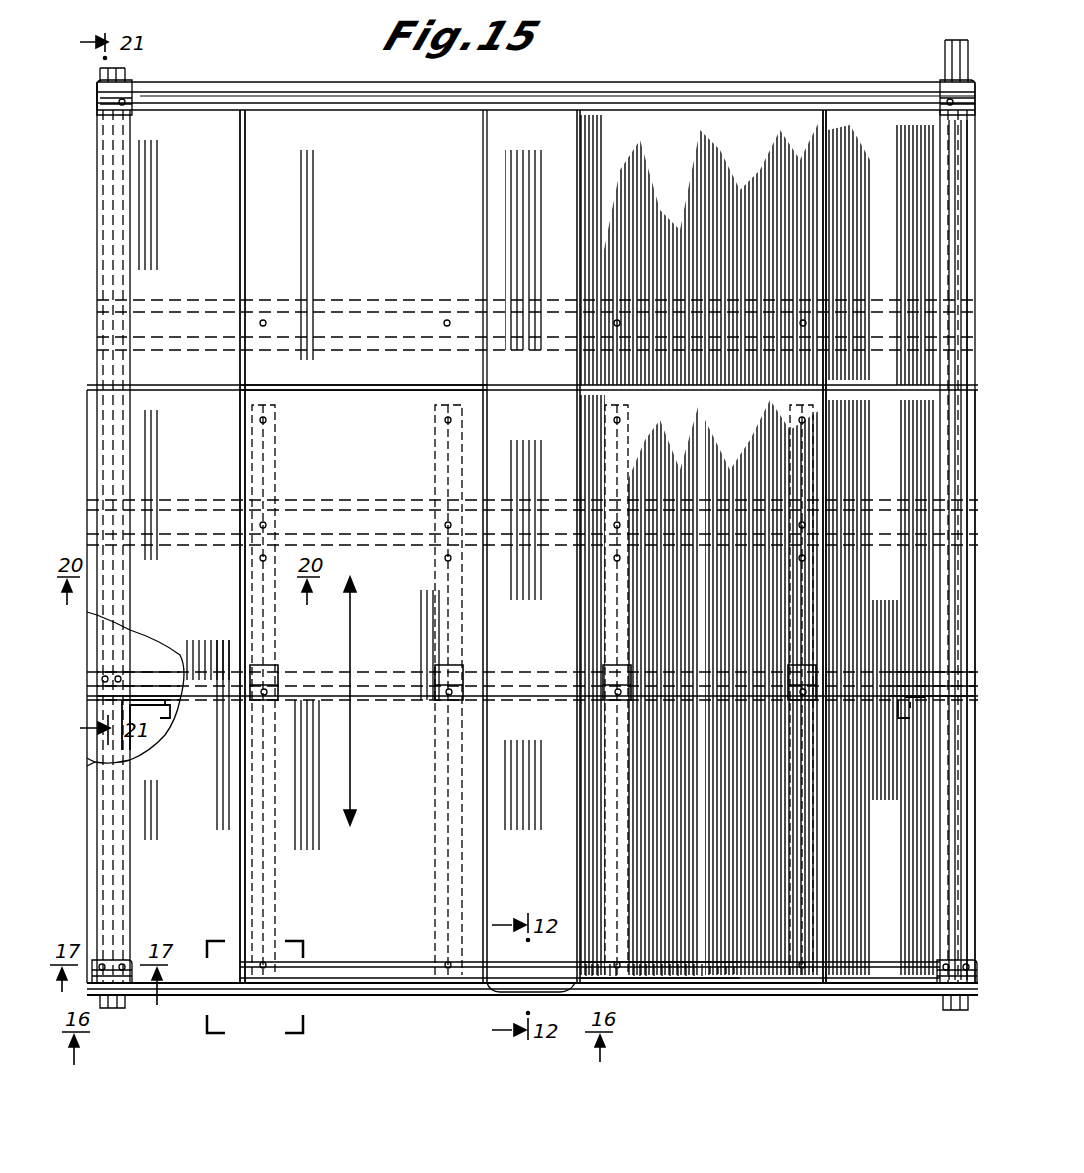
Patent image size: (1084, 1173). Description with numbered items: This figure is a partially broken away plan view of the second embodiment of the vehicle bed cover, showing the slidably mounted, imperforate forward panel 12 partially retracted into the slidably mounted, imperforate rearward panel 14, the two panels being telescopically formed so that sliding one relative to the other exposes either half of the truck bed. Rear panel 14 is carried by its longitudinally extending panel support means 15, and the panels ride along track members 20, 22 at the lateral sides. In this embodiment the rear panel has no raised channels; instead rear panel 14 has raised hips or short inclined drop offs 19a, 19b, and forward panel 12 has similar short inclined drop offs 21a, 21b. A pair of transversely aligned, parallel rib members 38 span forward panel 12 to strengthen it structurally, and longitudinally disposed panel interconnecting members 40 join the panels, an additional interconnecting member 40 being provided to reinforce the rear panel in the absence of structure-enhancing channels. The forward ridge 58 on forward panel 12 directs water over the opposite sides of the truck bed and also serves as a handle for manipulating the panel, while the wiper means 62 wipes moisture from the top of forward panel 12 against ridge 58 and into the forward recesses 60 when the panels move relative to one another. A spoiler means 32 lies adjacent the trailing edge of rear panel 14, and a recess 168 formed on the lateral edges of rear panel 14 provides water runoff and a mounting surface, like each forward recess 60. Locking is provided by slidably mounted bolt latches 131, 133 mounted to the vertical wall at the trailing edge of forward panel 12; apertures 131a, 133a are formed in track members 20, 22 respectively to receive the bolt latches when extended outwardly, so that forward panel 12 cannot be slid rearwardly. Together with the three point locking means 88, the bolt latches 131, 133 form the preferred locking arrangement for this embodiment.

The forward panel 12 is at (336, 125).
The rearward panel 14 is at (925, 470).
The panel support means 15 is at (692, 990).
The raised hip 19a is at (240, 450).
The raised hip 19b is at (826, 452).
The track member 20 is at (120, 1006).
The raised hip 21a is at (240, 220).
The raised hip 21b is at (826, 222).
The track member 22 is at (945, 1000).
The spoiler means 32 is at (660, 975).
The rib members 38 is at (358, 303).
The panel interconnecting members 40 is at (432, 462).
The forward ridge 58 is at (193, 98).
The forward recess 60 is at (135, 95).
The wiper means 62 is at (390, 387).
The locking means 88 is at (492, 990).
The bolt latch 131 is at (150, 707).
The aperture 131a is at (137, 697).
The bolt latch 133 is at (915, 710).
The aperture 133a is at (920, 700).
The recess 168 is at (120, 962).